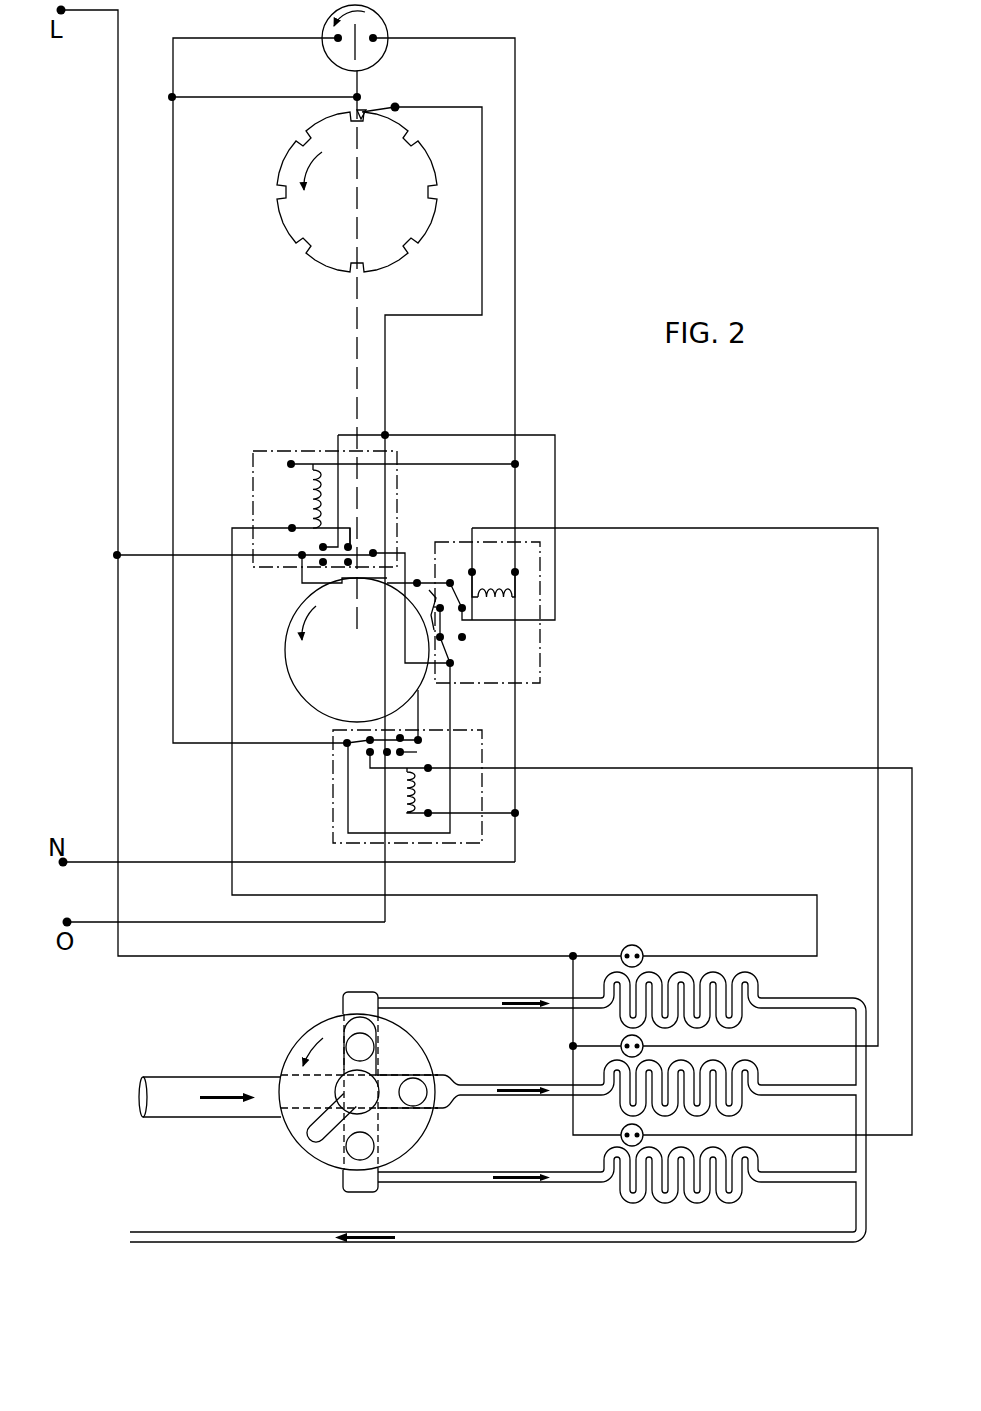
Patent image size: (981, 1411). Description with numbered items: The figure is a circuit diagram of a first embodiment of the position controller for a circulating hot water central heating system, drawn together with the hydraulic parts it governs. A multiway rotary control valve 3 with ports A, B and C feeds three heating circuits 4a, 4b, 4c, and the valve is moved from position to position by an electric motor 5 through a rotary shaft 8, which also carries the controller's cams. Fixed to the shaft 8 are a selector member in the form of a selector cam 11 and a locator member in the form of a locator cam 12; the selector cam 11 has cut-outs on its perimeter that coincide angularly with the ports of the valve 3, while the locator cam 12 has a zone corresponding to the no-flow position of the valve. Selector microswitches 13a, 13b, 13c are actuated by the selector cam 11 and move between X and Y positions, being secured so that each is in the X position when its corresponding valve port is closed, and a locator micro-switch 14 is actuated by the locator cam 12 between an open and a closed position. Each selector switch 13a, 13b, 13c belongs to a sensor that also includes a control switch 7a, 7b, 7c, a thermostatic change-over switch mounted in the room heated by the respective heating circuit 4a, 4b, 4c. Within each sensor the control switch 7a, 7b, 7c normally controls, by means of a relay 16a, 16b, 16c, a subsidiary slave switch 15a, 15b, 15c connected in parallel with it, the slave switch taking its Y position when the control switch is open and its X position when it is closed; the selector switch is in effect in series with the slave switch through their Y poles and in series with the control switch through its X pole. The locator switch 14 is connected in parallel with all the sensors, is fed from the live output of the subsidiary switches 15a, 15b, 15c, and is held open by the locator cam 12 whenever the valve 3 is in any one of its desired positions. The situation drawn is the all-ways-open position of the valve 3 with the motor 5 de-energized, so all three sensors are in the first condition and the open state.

The multiway rotary control valve 3 is at (295, 1125).
The heating circuit 4a is at (755, 1173).
The heating circuit 4b is at (755, 1085).
The heating circuit 4c is at (778, 982).
The electric motor 5 is at (340, 52).
The control switch 7a is at (623, 1128).
The control switch 7b is at (622, 1040).
The control switch 7c is at (622, 948).
The rotary shaft 8 is at (353, 318).
The selector cam 11 is at (303, 690).
The locator cam 12 is at (310, 210).
The selector microswitch 13a is at (362, 745).
The selector microswitch 13b is at (452, 653).
The selector microswitch 13c is at (352, 560).
The locator micro-switch 14 is at (373, 105).
The subsidiary slave switch 15a is at (417, 752).
The subsidiary slave switch 15b is at (462, 582).
The subsidiary slave switch 15c is at (302, 557).
The relay 16a is at (397, 797).
The relay 16b is at (490, 590).
The relay 16c is at (305, 497).